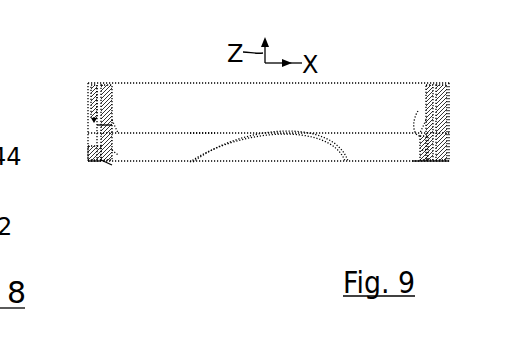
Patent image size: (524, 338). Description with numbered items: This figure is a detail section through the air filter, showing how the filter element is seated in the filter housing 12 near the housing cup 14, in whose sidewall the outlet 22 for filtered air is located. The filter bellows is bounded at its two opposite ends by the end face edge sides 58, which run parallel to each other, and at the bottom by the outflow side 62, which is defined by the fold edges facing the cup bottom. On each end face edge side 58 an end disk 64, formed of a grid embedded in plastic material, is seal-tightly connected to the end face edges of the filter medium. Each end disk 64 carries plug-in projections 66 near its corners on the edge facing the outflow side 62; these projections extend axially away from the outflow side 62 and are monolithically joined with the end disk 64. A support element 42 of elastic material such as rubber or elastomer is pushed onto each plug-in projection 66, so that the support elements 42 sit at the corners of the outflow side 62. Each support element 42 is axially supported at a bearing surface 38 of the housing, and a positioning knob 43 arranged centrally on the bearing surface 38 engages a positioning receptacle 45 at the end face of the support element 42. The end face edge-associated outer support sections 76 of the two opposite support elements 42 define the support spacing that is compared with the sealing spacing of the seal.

The filter housing 12 is at (88, 76).
The housing cup 14 is at (92, 110).
The outlet 22 is at (287, 150).
The bearing surface 38 is at (108, 165).
The support element 42 is at (120, 133).
The positioning knob 43 is at (94, 161).
The positioning receptacle 45 is at (113, 155).
The end face edge side 58 is at (113, 92).
The outflow side 62 is at (201, 140).
The end disk 64 is at (105, 90).
The plug-in projection 66 is at (108, 128).
The outer support section 76 is at (100, 143).